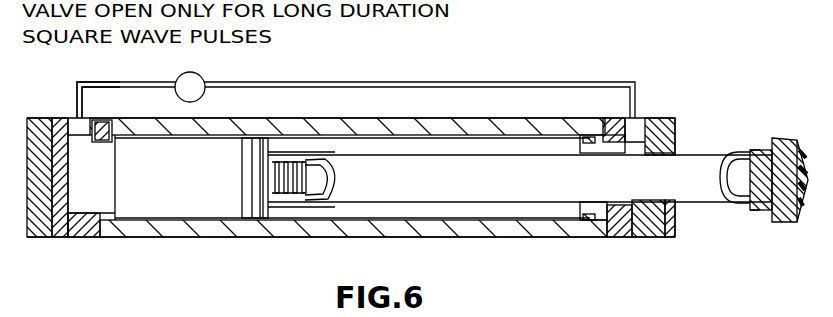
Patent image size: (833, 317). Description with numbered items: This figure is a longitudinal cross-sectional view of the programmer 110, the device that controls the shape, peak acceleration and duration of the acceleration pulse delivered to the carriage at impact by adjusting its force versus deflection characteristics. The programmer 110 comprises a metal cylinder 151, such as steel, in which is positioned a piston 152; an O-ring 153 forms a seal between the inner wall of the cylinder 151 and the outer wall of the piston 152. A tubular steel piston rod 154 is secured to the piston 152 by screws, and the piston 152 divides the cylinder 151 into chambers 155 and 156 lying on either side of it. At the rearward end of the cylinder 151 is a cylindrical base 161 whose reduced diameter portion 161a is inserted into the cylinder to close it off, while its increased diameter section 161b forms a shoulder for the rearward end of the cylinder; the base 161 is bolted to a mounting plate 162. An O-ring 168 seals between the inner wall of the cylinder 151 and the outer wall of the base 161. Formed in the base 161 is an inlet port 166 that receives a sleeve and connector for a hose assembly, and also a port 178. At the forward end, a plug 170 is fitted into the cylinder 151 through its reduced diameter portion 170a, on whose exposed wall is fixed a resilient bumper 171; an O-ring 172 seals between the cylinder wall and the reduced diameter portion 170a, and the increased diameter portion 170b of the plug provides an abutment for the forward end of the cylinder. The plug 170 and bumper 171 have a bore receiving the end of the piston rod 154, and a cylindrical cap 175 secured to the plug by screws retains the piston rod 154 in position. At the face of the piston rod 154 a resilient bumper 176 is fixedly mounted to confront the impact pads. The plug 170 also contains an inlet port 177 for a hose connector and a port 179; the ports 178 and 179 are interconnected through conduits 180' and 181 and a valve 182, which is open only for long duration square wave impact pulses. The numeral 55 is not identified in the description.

The programmer 110 is at (552, 66).
The conduit 180' is at (115, 85).
The conduit 181 is at (328, 82).
The valve 182 is at (204, 79).
The mounting plate 162 is at (45, 117).
The cylinder 151 is at (428, 122).
The O-ring 168 is at (101, 133).
The port 178 is at (86, 177).
The inlet port 166 is at (82, 213).
The cylindrical base 161 is at (58, 236).
The reduced diameter portion 161a is at (120, 140).
The increased diameter section 161b is at (73, 228).
The chamber 155 is at (363, 222).
The chamber 156 is at (167, 222).
The piston 152 is at (243, 152).
The O-ring 153 is at (262, 188).
The piston rod 154 is at (490, 187).
The reduced diameter portion 170a is at (603, 125).
The port 179 is at (625, 140).
The increased diameter portion 170b is at (668, 104).
The plug 170 is at (686, 121).
The cylindrical cap 175 is at (678, 146).
The resilient bumper 171 is at (563, 210).
The O-ring 172 is at (593, 216).
The inlet port 177 is at (632, 217).
The resilient bumper 176 is at (800, 142).
The valve seat 55 is at (750, 215).